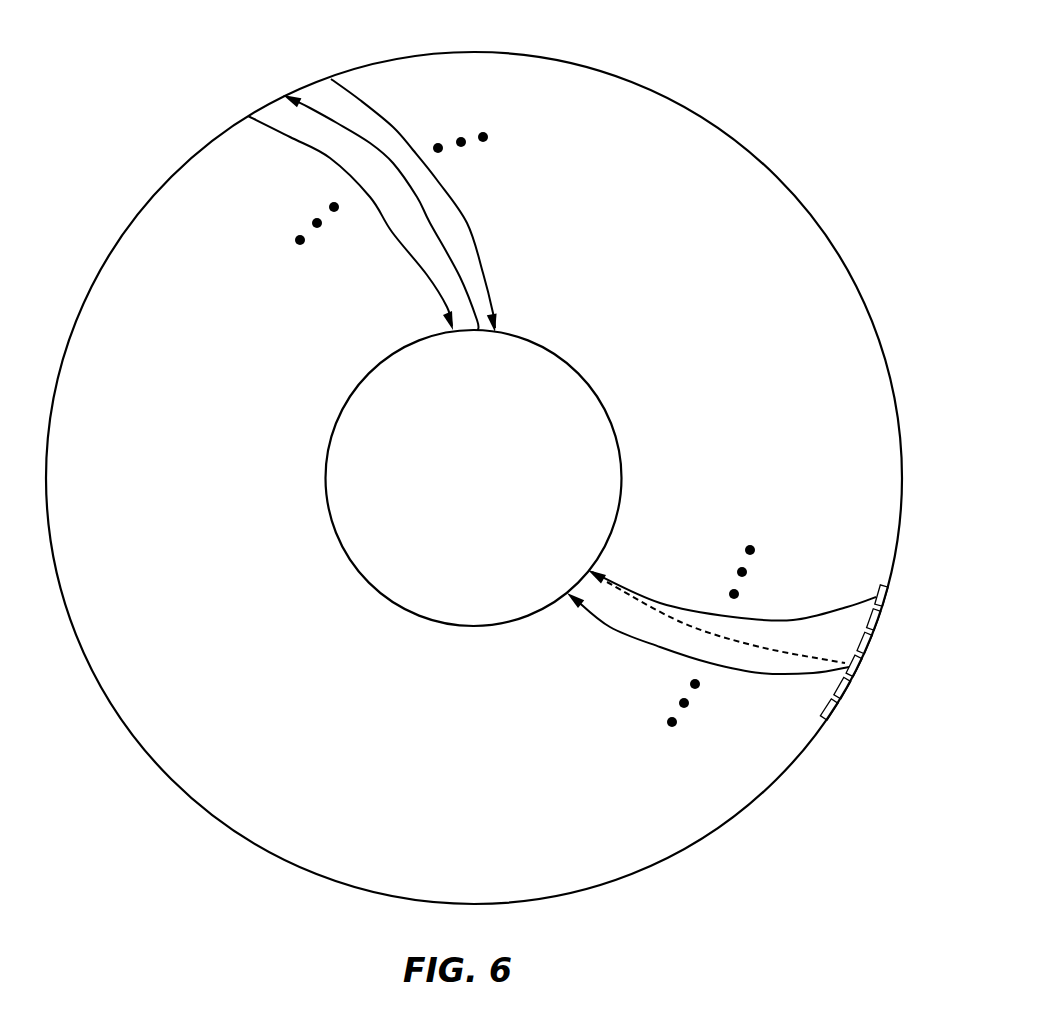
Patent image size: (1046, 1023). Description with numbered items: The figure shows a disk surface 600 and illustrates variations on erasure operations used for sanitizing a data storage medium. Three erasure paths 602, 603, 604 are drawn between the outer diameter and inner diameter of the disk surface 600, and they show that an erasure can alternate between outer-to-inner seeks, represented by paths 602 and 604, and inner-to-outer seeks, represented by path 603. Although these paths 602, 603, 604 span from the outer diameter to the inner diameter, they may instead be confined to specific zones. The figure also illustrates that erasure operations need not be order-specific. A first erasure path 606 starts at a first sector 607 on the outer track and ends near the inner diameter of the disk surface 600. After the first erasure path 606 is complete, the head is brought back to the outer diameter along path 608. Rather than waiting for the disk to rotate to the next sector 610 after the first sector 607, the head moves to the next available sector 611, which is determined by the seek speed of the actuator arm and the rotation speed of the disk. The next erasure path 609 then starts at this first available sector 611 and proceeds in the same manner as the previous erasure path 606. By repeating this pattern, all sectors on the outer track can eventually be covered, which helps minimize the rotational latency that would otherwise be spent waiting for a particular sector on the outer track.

The disk surface 600 is at (140, 122).
The path 602 is at (260, 118).
The path 603 is at (310, 108).
The path 604 is at (358, 93).
The first erasure path 606 is at (862, 600).
The first sector 607 is at (883, 602).
The path 608 is at (813, 657).
The next erasure path 609 is at (797, 675).
The next sector 610 is at (877, 623).
The next available sector 611 is at (857, 667).